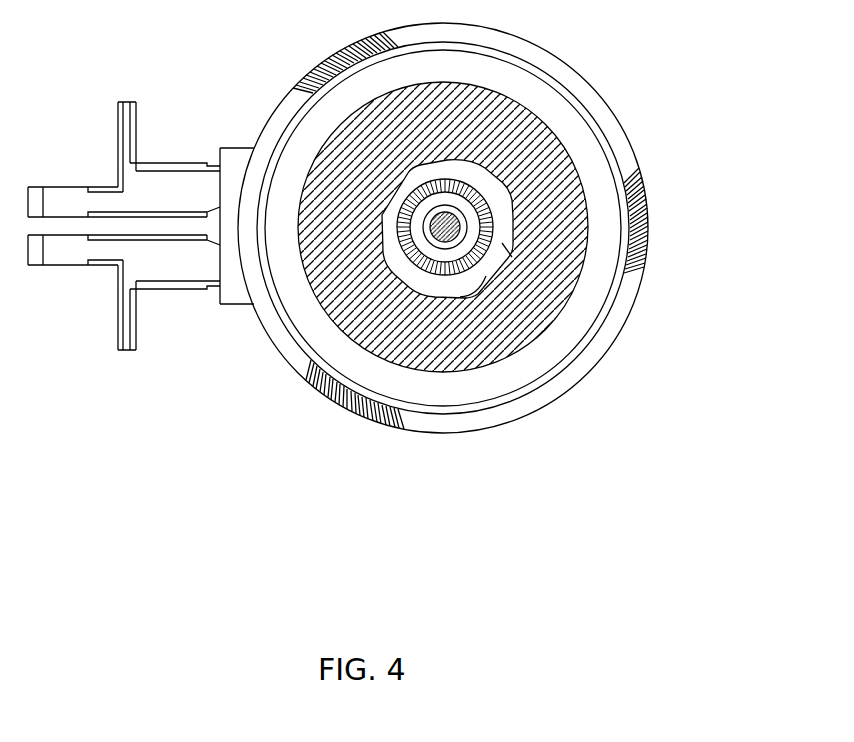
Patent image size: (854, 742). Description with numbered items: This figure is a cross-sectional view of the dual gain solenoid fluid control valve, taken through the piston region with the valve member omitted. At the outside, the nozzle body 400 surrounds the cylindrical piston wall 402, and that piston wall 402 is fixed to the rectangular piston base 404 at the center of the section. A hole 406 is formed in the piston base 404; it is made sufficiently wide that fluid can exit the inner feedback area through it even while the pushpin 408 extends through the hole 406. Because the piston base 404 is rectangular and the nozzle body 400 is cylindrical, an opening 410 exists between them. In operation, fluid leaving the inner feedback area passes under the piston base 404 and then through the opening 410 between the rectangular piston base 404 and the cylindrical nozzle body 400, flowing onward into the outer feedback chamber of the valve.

The nozzle body 400 is at (552, 168).
The cylindrical piston wall 402 is at (478, 273).
The rectangular piston base 404 is at (500, 243).
The hole 406 is at (485, 175).
The pushpin 408 is at (447, 225).
The opening 410 is at (455, 211).